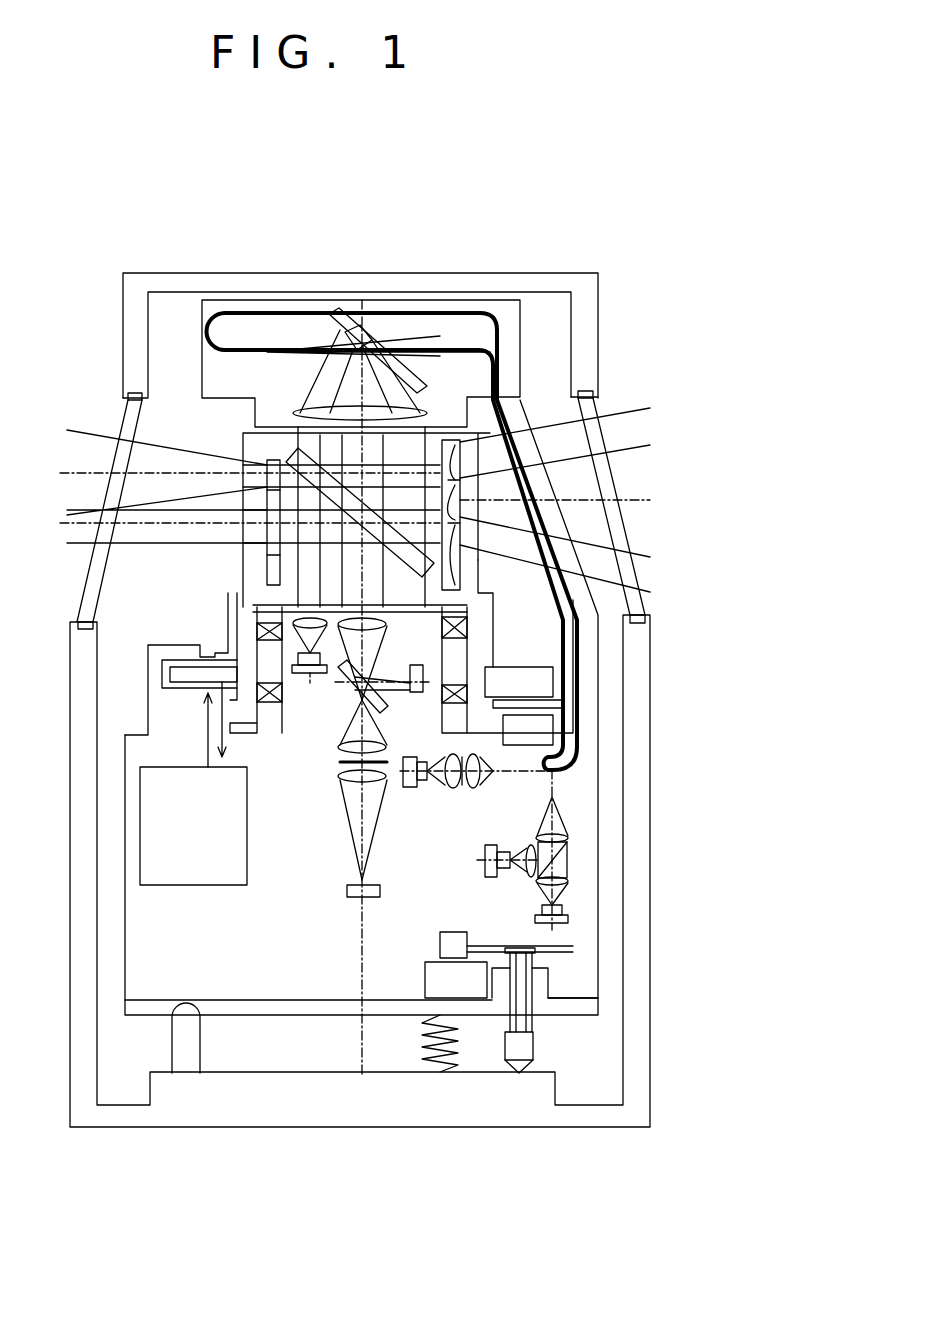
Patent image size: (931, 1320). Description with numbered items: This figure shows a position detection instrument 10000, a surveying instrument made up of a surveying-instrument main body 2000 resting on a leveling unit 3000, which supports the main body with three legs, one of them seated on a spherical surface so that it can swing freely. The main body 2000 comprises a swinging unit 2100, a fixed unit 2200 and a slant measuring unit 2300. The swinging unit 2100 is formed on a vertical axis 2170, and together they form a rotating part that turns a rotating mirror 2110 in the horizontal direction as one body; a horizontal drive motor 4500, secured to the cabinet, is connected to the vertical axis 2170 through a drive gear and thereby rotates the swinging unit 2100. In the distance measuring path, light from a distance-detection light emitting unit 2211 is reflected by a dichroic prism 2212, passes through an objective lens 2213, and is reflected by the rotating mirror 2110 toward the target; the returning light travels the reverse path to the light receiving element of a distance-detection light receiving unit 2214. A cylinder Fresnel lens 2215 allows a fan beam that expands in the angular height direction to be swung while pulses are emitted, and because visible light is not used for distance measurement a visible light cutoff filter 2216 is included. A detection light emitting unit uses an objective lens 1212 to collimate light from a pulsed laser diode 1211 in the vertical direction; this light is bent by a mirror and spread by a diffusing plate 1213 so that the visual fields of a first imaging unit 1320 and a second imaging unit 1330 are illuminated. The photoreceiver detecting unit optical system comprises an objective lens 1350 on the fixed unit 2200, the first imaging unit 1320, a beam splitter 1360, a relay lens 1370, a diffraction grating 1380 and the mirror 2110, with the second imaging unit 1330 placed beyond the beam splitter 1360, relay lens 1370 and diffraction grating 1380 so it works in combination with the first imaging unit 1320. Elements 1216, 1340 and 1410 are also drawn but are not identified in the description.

The position detection instrument 10000 is at (508, 1160).
The surveying-instrument main body 2000 is at (44, 886).
The swinging unit 2100 is at (662, 713).
The fixed unit 2200 is at (214, 270).
The slant measuring unit 2300 is at (167, 885).
The leveling unit 3000 is at (569, 1032).
The horizontal drive motor 4500 is at (517, 745).
The pulsed laser diode 1211 is at (302, 675).
The objective lens 1212 is at (283, 608).
The diffusing plate 1213 is at (267, 462).
The beam splitter 1216 is at (567, 861).
The first imaging unit 1320 is at (535, 918).
The second imaging unit 1330 is at (355, 898).
The detector 1340 is at (412, 692).
The objective lens 1350 is at (385, 627).
The beam splitter 1360 is at (383, 708).
The relay lens 1370 is at (324, 763).
The diffraction grating 1380 is at (400, 788).
The stage arm 1410 is at (171, 623).
The rotating mirror 2110 is at (415, 570).
The vertical axis 2170 is at (493, 613).
The distance-detection light emitting unit 2211 is at (483, 864).
The dichroic prism 2212 is at (513, 833).
The objective lens 2213 is at (433, 410).
The distance-detection light receiving unit 2214 is at (427, 797).
The cylinder Fresnel lens 2215 is at (453, 570).
The visible light cutoff filter 2216 is at (460, 788).